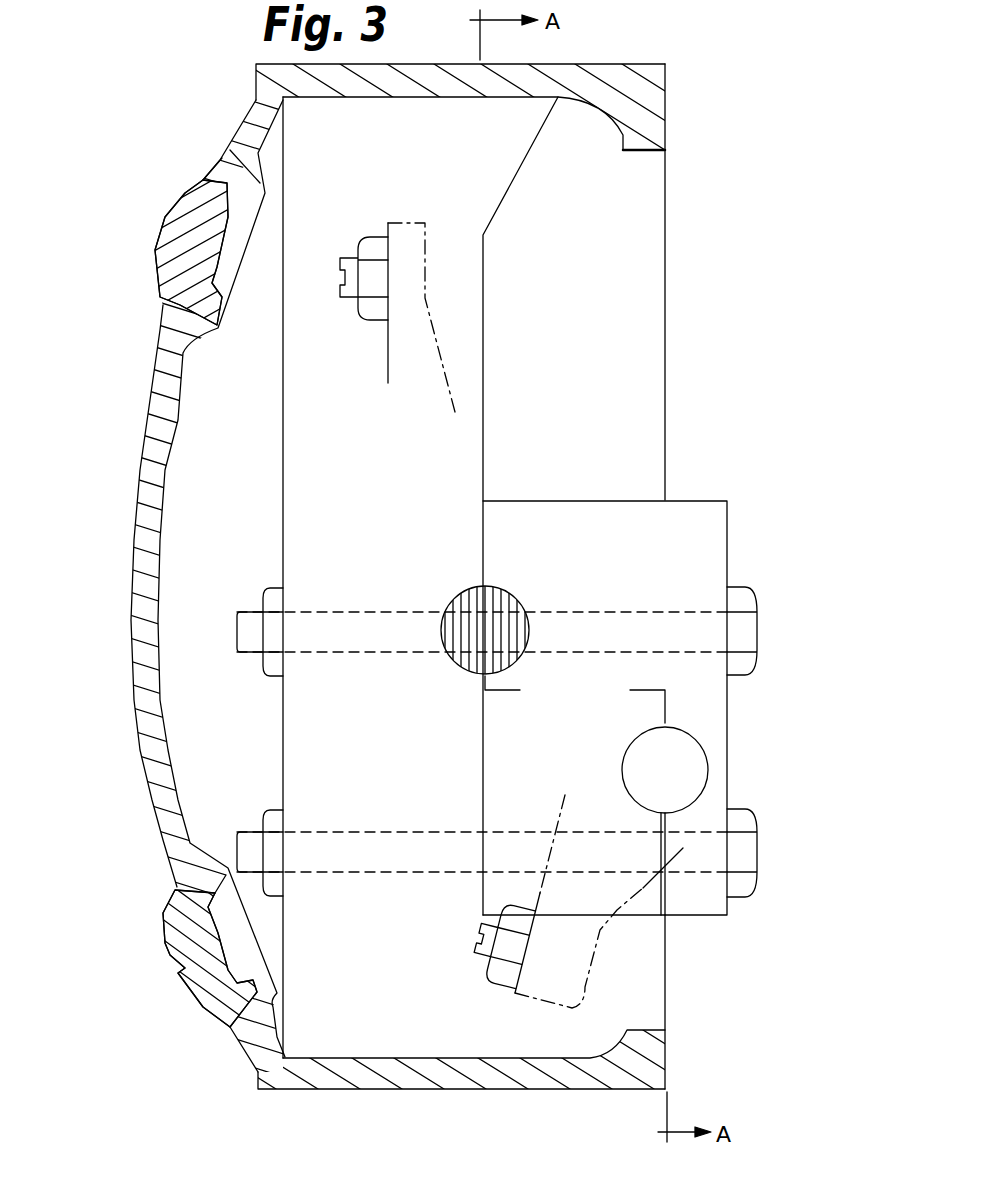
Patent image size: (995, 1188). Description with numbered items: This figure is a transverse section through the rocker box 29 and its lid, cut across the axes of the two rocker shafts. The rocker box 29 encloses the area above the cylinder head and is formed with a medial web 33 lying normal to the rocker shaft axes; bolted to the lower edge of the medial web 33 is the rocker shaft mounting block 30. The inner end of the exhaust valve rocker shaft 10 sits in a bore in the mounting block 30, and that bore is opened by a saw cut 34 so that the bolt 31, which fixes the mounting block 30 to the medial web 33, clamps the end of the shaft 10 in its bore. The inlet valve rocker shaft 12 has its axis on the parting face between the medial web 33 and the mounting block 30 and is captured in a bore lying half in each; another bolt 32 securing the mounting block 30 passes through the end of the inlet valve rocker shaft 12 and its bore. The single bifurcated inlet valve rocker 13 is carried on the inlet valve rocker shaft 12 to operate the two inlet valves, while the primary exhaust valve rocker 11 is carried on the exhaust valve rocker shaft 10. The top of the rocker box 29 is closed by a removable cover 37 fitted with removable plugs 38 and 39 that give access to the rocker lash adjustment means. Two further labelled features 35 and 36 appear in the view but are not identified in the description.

The exhaust valve rocker shaft 10 is at (680, 781).
The primary exhaust valve rocker 11 is at (568, 970).
The inlet valve rocker shaft 12 is at (468, 598).
The bifurcated inlet valve rocker 13 is at (407, 342).
The rocker box 29 is at (510, 1090).
The rocker shaft mounting block 30 is at (675, 507).
The bolt 31 is at (327, 840).
The bolt 32 is at (313, 622).
The medial web 33 is at (300, 748).
The saw cut 34 is at (664, 890).
The bore 35 is at (688, 724).
The rod cross-section 36 is at (517, 604).
The cover 37 is at (134, 661).
The removable plug 38 is at (165, 928).
The removable plug 39 is at (200, 207).